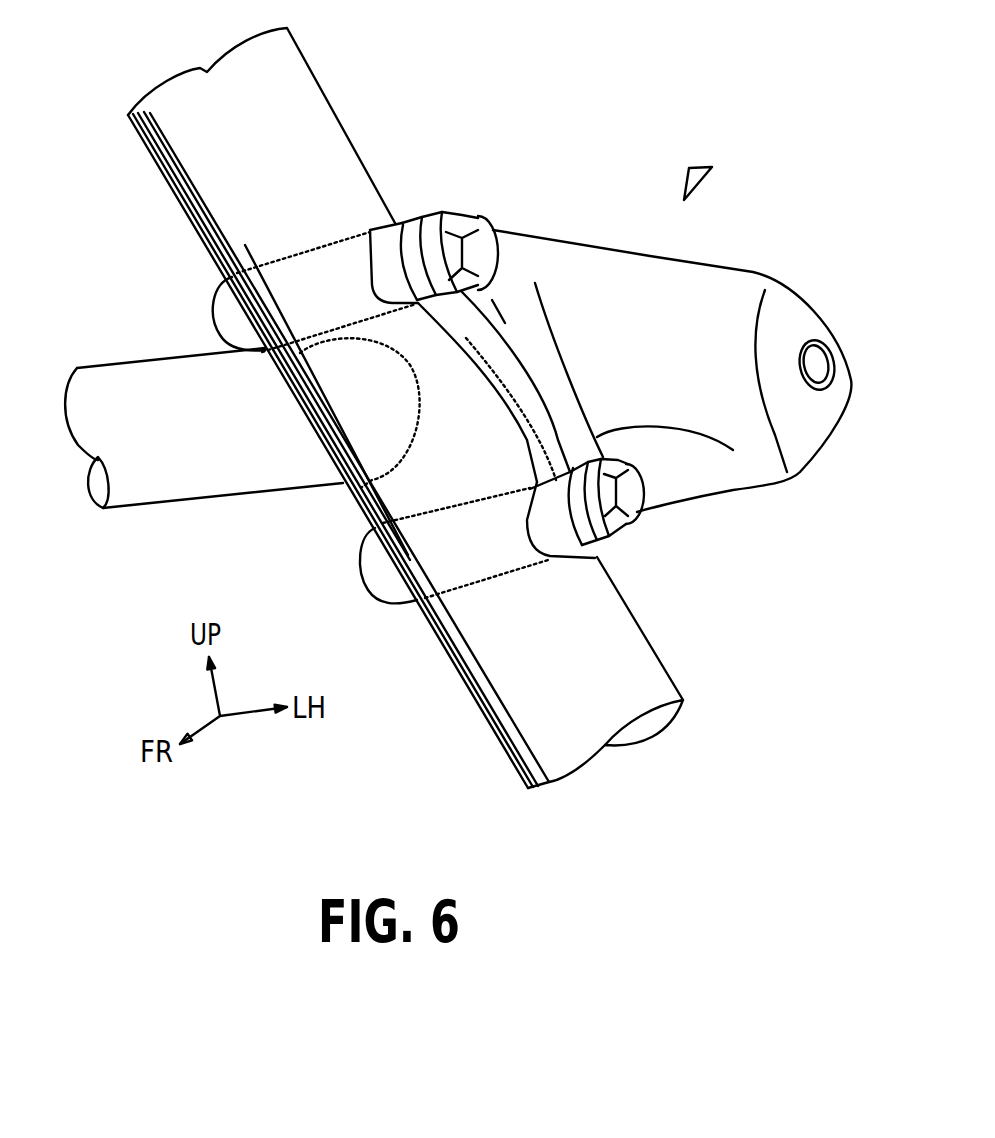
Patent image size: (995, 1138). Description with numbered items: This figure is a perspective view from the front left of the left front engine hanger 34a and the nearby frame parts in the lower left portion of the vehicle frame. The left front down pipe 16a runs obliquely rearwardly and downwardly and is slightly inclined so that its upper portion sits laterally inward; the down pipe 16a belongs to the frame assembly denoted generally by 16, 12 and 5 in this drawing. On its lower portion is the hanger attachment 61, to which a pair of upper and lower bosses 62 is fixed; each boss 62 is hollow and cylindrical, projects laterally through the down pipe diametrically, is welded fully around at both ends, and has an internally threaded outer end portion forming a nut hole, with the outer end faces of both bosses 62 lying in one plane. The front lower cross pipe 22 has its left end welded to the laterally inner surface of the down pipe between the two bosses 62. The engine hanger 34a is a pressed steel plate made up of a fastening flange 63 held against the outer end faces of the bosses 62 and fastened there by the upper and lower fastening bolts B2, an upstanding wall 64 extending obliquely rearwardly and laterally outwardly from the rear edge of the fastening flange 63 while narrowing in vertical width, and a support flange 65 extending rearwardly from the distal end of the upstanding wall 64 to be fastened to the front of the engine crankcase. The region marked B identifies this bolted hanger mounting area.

The vehicle body frame 5 is at (405, 408).
The frame member 12 is at (405, 408).
The frame pipe 16 is at (348, 117).
The left front down pipe 16a is at (300, 95).
The front lower cross pipe 22 is at (100, 380).
The left front engine hanger 34a is at (762, 263).
The hanger attachment 61 is at (348, 483).
The bosses 62 is at (223, 313).
The fastening flange 63 is at (536, 300).
The upstanding wall 64 is at (688, 283).
The support flange 65 is at (806, 320).
The fastening bolts B2 is at (477, 235).
The bracket mounting region B is at (690, 190).